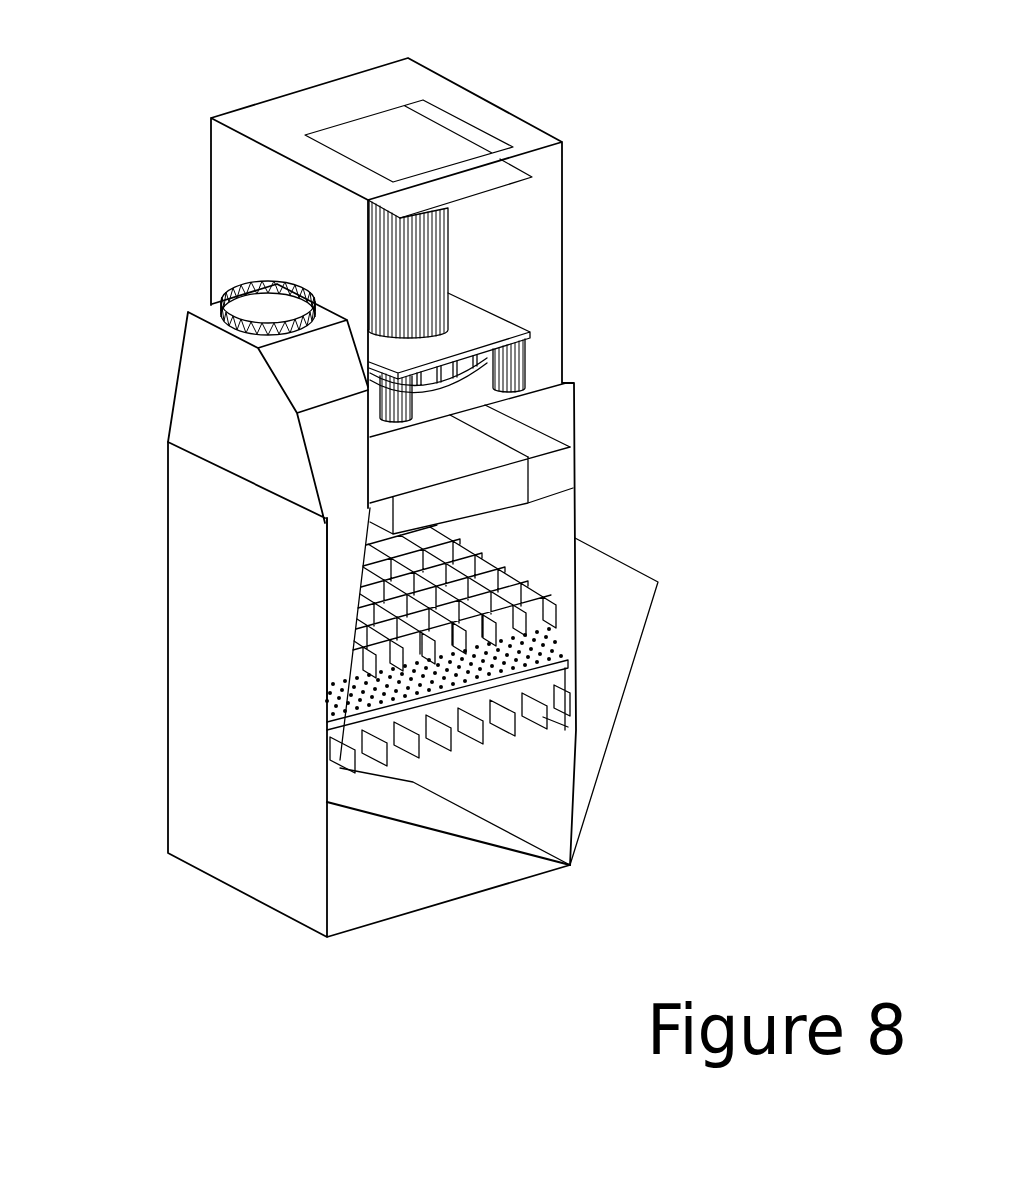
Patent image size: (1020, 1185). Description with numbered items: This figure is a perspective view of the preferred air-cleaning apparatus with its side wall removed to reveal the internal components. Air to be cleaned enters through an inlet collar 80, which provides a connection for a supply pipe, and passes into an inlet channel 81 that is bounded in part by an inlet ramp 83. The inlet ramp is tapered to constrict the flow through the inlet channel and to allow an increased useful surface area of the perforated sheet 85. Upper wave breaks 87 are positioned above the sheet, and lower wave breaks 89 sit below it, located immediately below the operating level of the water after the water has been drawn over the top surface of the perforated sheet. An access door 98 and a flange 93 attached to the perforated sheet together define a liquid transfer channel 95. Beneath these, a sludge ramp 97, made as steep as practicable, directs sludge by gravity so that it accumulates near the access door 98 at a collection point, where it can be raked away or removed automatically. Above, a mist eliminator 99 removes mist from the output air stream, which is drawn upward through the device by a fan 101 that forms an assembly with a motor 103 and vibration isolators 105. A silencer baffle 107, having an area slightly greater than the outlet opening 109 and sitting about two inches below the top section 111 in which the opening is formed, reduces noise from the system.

The inlet collar 80 is at (218, 284).
The inlet channel 81 is at (338, 588).
The inlet ramp 83 is at (340, 697).
The perforated sheet 85 is at (535, 660).
The upper wave breaks 87 is at (482, 600).
The lower wave breaks 89 is at (473, 720).
The flange 93 is at (557, 693).
The liquid transfer channel 95 is at (570, 697).
The sludge ramp 97 is at (435, 813).
The access door 98 is at (560, 473).
The mist eliminator 99 is at (512, 483).
The fan 101 is at (448, 414).
The motor 103 is at (423, 240).
The vibration isolators 105 is at (532, 366).
The silencer baffle 107 is at (475, 182).
The outlet opening 109 is at (467, 118).
The top section 111 is at (363, 97).